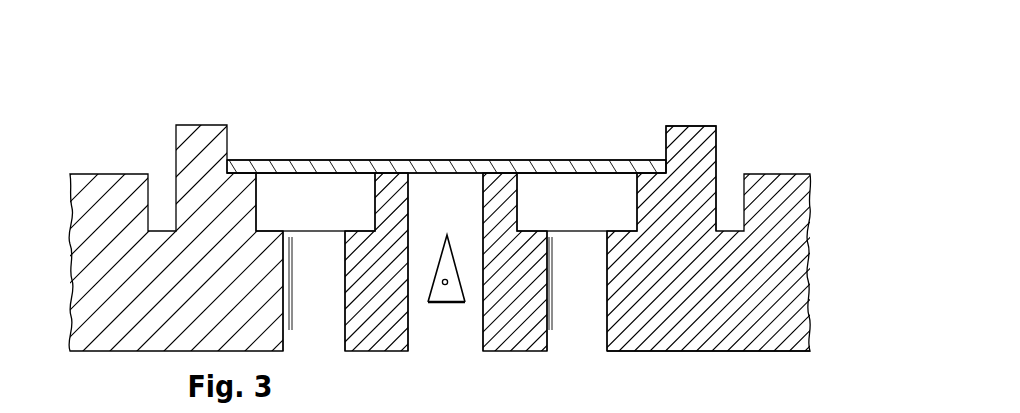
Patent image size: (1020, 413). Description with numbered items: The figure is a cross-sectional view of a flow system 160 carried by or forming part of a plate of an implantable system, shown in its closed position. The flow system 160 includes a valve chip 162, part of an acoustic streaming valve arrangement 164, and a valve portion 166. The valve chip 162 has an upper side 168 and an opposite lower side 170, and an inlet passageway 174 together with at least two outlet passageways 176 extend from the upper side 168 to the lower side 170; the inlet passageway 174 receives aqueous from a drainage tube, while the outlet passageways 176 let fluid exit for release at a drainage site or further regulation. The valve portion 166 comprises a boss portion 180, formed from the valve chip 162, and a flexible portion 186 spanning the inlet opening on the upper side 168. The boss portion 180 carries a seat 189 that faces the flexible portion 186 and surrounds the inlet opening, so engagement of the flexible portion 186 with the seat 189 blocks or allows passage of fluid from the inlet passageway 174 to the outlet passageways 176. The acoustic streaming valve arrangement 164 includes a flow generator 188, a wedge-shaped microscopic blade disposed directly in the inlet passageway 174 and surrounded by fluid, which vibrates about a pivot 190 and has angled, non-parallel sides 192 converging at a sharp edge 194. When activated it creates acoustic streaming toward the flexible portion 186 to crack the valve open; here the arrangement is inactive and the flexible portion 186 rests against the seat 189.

The flow system 160 is at (510, 211).
The valve chip 162 is at (130, 340).
The acoustic streaming valve arrangement 164 is at (452, 304).
The valve portion 166 is at (563, 149).
The upper side 168 is at (697, 126).
The lower side 170 is at (745, 351).
The inlet passageway 174 is at (408, 348).
The outlet passageway 176 is at (338, 338).
The boss portion 180 is at (382, 203).
The flexible portion 186 is at (463, 160).
The flow generator 188 is at (442, 304).
The seat 189 is at (388, 172).
The pivot 190 is at (452, 272).
The angled, non-parallel sides 192 is at (433, 280).
The sharp edge 194 is at (445, 232).